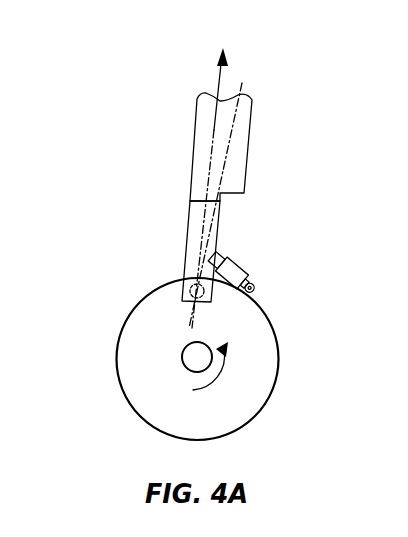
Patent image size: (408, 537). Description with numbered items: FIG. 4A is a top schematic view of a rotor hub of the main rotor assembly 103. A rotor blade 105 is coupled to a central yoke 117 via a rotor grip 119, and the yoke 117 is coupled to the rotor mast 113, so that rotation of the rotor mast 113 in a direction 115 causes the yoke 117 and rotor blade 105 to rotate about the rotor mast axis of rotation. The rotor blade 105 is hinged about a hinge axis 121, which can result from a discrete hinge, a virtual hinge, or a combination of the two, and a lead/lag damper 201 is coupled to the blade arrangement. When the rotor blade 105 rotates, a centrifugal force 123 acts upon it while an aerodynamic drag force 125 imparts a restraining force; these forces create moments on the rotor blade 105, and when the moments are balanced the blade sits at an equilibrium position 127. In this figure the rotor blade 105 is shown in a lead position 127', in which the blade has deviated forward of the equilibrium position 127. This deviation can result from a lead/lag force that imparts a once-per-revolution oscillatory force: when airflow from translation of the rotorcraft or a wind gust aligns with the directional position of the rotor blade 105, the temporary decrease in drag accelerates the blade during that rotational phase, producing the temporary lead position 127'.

The main rotor assembly 103 is at (84, 162).
The rotor blade 105 is at (247, 150).
The rotor mast 113 is at (183, 366).
The direction 115 is at (224, 384).
The yoke 117 is at (265, 315).
The rotor grip 119 is at (186, 245).
The hinge axis 121 is at (183, 286).
The centrifugal force 123 is at (219, 75).
The aerodynamic drag force 125 is at (152, 117).
The equilibrium position 127 is at (267, 181).
The lead position 127' is at (163, 229).
The lead/lag damper 201 is at (259, 250).